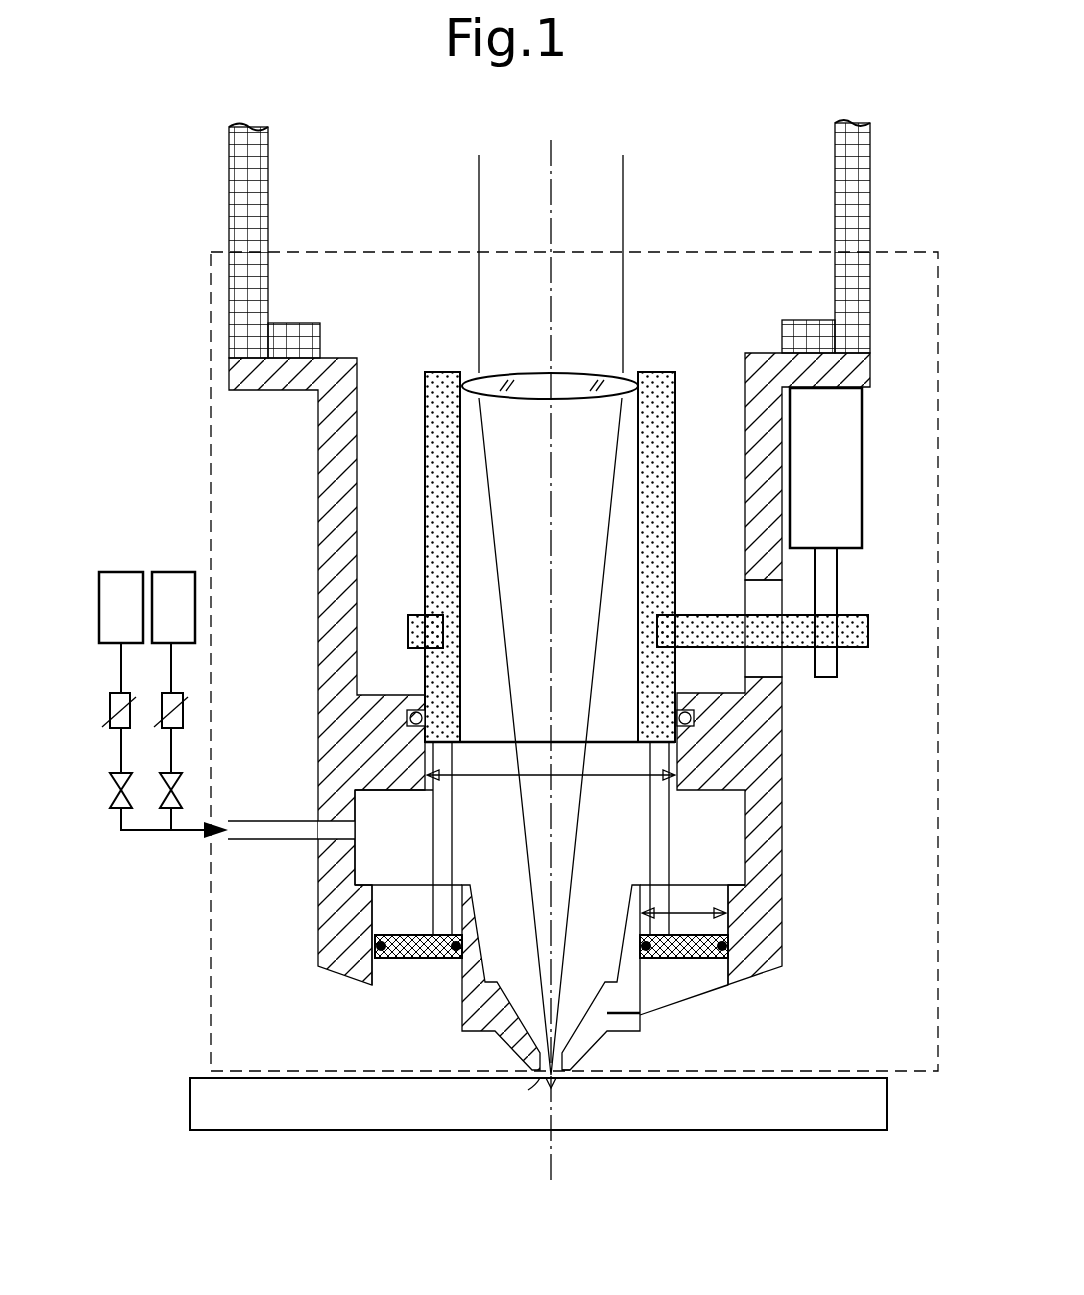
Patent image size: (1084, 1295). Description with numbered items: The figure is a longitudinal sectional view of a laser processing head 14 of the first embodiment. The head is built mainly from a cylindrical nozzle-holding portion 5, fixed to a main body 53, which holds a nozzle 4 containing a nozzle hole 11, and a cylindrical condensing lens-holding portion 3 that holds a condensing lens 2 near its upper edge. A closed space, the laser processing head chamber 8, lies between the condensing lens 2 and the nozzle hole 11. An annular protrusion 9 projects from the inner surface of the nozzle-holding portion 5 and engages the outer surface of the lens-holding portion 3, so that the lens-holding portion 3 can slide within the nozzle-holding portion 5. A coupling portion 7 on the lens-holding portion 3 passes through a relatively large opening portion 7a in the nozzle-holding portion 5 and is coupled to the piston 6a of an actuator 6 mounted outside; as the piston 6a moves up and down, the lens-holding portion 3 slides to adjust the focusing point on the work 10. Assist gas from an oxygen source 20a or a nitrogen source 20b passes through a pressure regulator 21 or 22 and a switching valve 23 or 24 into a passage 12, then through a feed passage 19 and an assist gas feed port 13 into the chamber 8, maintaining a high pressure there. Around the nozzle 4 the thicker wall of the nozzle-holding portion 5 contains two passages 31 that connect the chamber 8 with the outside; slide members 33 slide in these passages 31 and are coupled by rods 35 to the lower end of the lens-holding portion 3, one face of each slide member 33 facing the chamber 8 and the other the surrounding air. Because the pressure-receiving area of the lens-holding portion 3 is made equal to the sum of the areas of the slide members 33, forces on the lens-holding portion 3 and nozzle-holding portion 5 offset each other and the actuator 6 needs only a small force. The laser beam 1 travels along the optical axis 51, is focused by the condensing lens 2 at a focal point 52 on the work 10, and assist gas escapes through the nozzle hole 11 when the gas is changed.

The laser beam 1 is at (624, 195).
The condensing lens 2 is at (590, 373).
The condensing lens-holding portion 3 is at (655, 373).
The nozzle 4 is at (620, 1030).
The nozzle-holding portion 5 is at (812, 931).
The actuator 6 is at (850, 450).
The piston 6a is at (828, 562).
The coupling portion 7 is at (855, 636).
The opening portion 7a is at (763, 581).
The laser processing head chamber 8 is at (600, 870).
The annular protrusion 9 is at (400, 712).
The to-be-processed work 10 is at (680, 1118).
The nozzle hole 11 is at (535, 1080).
The passage 12 is at (174, 840).
The assist gas feed port 13 is at (352, 835).
The laser processing head 14 is at (574, 661).
The feed passage 19 is at (246, 840).
The assist gas source 20a is at (122, 572).
The assist gas source 20b is at (175, 572).
The pressure regulator 21 is at (110, 705).
The pressure regulator 22 is at (165, 705).
The switching valve 23 is at (112, 785).
The switching valve 24 is at (165, 785).
The passage 31 is at (460, 988).
The slide member 33 is at (378, 962).
The rod 35 is at (335, 880).
The optical axis 51 is at (556, 212).
The focal point 52 is at (552, 1080).
The main body 53 is at (850, 205).